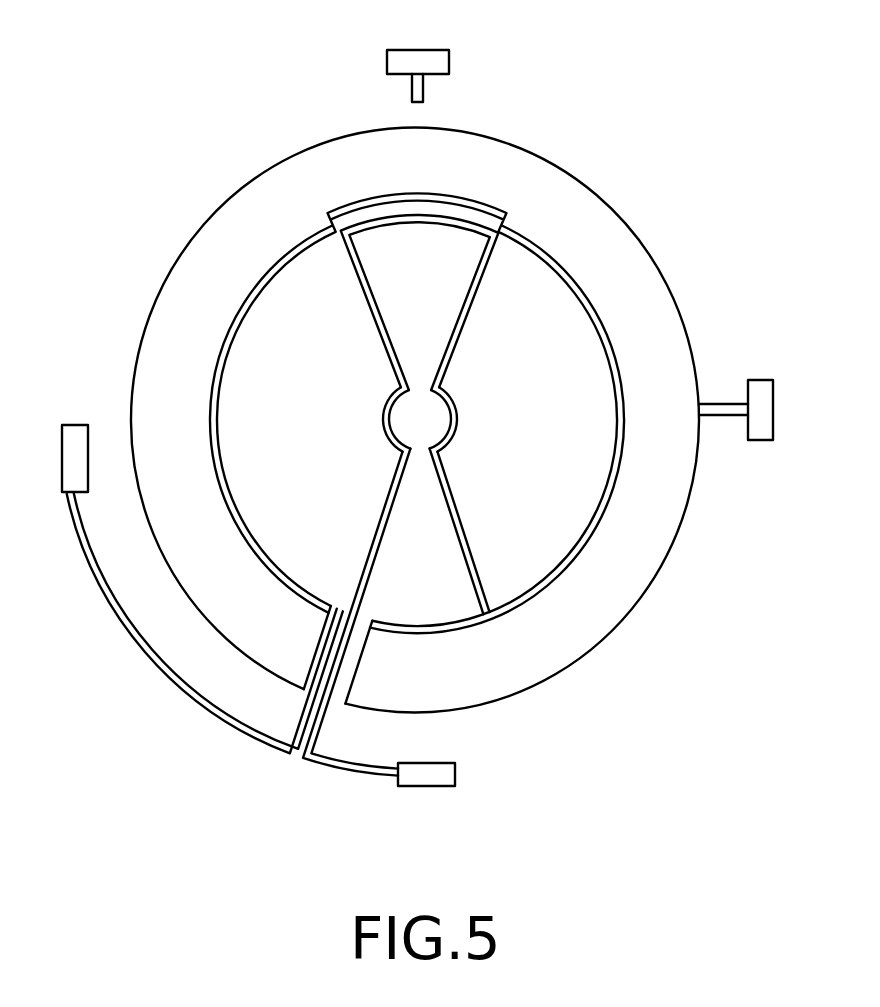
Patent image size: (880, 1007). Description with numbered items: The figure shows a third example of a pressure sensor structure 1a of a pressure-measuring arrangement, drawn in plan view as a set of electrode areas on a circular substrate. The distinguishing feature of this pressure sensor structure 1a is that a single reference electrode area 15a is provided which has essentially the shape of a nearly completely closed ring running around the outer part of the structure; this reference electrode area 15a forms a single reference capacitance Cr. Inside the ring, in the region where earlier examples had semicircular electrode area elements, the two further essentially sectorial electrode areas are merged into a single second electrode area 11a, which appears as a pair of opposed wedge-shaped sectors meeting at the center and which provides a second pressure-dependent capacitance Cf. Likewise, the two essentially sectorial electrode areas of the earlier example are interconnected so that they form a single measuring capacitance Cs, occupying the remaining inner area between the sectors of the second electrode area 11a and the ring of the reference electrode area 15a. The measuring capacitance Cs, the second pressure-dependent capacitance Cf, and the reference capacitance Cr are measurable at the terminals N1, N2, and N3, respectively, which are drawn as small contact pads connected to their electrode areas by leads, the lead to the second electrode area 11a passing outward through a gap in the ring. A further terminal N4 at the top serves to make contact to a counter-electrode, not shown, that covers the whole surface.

The pressure sensor structure 1a is at (420, 422).
The reference electrode area 15a is at (483, 437).
The second electrode area 11a is at (552, 495).
The second pressure-dependent capacitance Cf is at (400, 495).
The reference capacitance Cr is at (639, 294).
The measuring capacitance Cs is at (310, 573).
The terminal N1 is at (54, 458).
The terminal N2 is at (426, 797).
The terminal N3 is at (759, 410).
The second terminal N4 is at (418, 58).